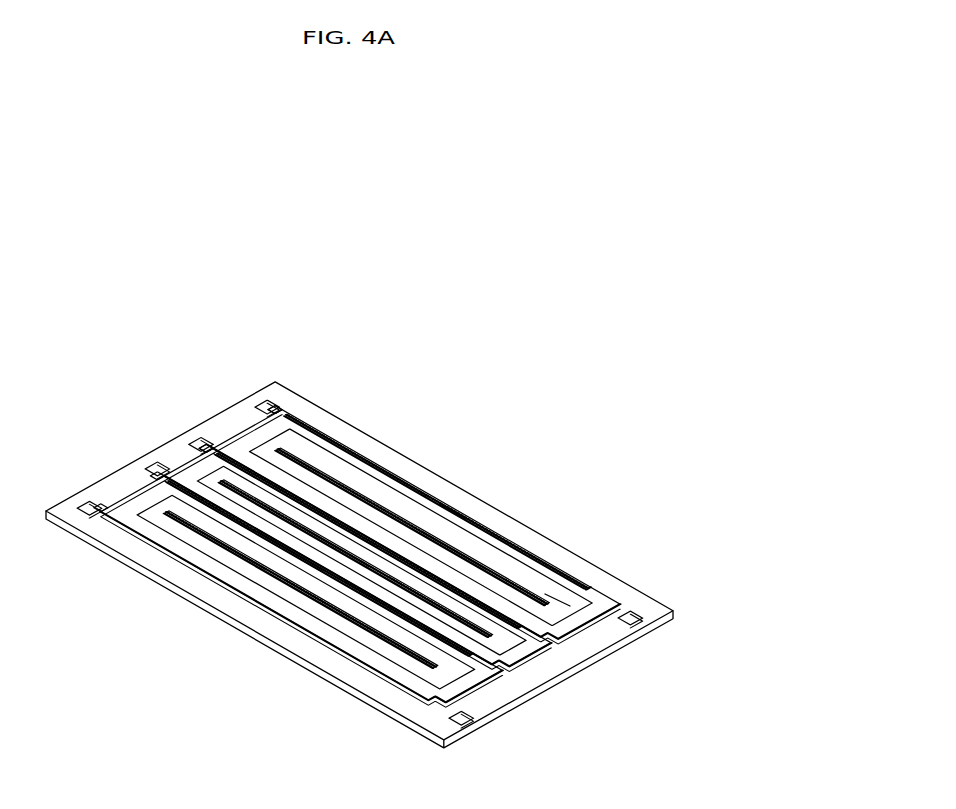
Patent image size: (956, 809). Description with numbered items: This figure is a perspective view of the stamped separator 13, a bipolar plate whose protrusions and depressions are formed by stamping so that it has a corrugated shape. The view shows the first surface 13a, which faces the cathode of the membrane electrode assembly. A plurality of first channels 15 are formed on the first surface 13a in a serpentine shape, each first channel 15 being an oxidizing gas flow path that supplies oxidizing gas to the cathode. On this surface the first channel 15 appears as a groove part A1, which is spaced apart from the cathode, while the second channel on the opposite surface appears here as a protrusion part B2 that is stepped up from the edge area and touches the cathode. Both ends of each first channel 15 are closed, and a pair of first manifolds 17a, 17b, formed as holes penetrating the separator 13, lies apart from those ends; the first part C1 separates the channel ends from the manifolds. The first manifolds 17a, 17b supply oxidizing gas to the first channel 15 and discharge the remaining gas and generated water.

The separator 13 is at (385, 284).
The first surface 13a is at (373, 452).
The first channel 15 is at (527, 545).
The first manifold 17a is at (262, 400).
The first manifold 17b is at (190, 440).
The first part C1 is at (272, 398).
The groove part A1 is at (453, 512).
The protrusion part B2 is at (555, 600).